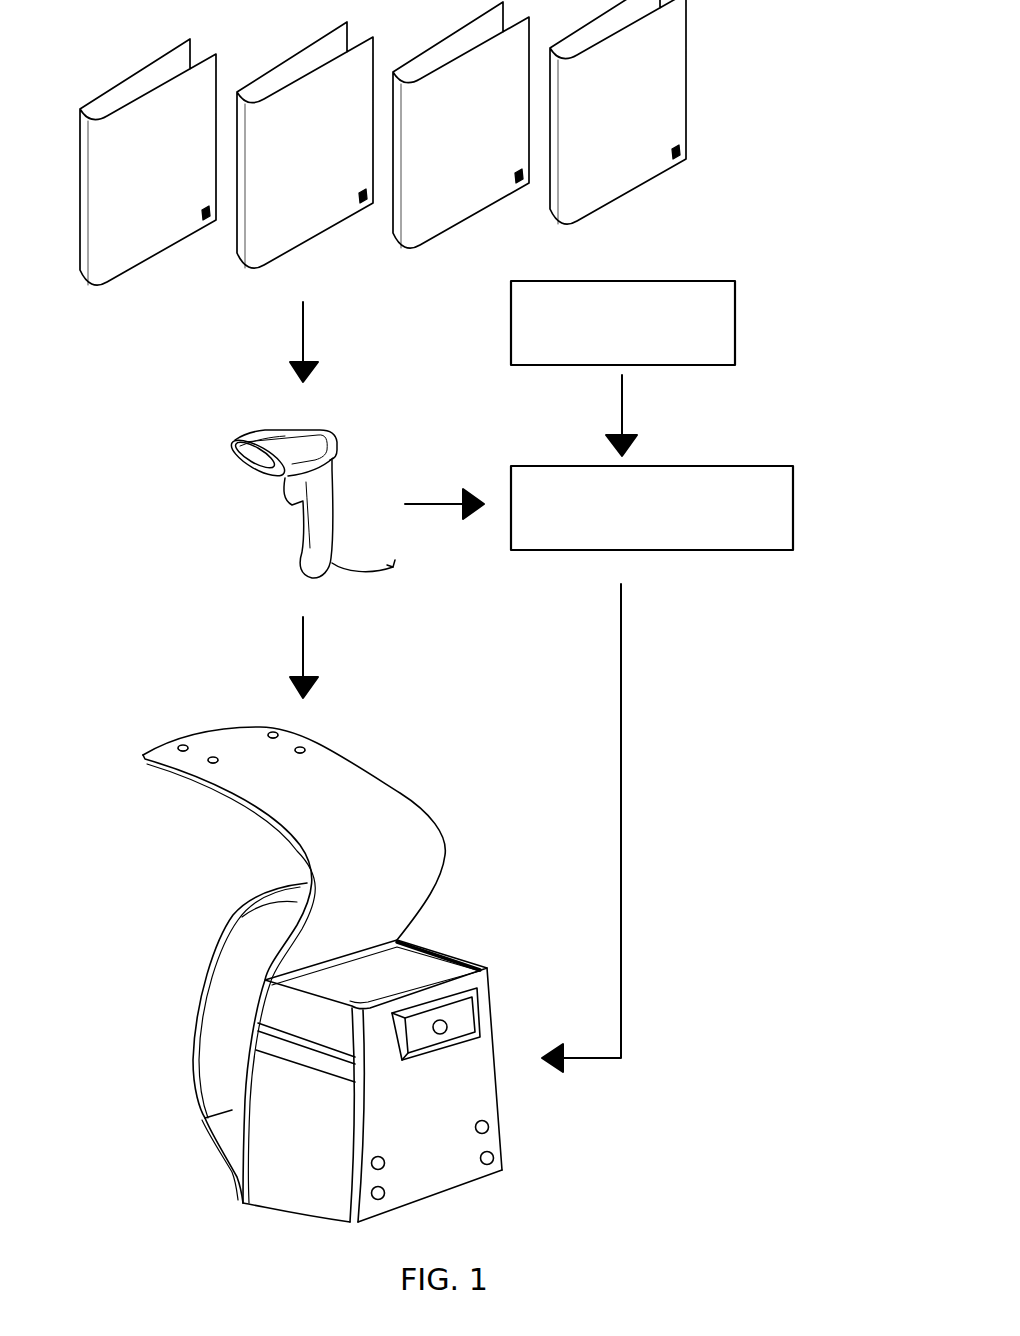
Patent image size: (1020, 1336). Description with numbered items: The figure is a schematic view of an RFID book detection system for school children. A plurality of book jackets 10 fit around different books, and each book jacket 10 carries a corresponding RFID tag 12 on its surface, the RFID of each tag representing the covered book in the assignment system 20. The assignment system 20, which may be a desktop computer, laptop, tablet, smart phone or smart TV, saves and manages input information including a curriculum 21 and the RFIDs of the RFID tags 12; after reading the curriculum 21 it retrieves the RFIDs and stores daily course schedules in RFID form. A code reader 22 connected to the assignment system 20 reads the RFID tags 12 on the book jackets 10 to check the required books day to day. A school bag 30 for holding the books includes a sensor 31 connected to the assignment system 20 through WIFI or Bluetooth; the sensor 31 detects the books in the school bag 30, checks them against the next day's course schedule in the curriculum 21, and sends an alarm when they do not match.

The book jacket 10 is at (213, 269).
The RFID tag 12 is at (356, 205).
The assignment system 20 is at (692, 562).
The curriculum 21 is at (735, 327).
The code reader 22 is at (302, 527).
The school bag 30 is at (200, 946).
The sensor 31 is at (455, 1013).